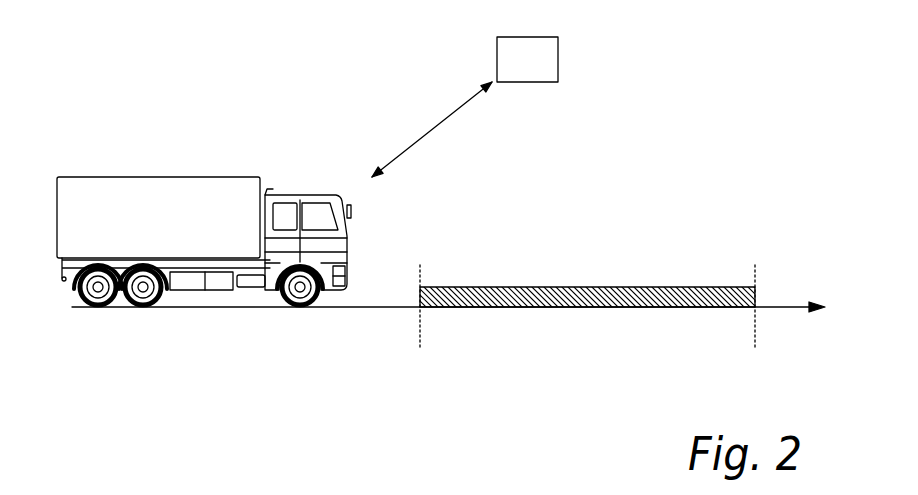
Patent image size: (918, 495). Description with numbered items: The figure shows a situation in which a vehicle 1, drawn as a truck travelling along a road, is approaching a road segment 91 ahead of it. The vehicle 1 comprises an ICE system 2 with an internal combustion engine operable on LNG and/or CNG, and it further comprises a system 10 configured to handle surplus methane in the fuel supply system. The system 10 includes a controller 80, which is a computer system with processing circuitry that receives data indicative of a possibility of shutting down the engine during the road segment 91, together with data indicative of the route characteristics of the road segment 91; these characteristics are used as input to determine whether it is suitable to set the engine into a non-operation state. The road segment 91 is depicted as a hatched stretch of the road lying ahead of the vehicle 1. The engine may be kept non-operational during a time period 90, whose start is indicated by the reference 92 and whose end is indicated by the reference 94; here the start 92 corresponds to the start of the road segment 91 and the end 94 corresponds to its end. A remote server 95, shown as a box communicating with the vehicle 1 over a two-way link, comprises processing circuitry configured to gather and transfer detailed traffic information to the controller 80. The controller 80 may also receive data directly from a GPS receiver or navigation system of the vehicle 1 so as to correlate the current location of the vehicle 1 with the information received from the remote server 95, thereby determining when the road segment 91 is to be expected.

The vehicle 1 is at (213, 205).
The ICE system 2 is at (213, 205).
The system 10 is at (213, 205).
The controller 80 is at (282, 196).
The time period 90 is at (608, 226).
The road segment 91 is at (528, 308).
The start of the time period 92 is at (421, 291).
The end of the time period 94 is at (755, 291).
The remote server 95 is at (465, 107).